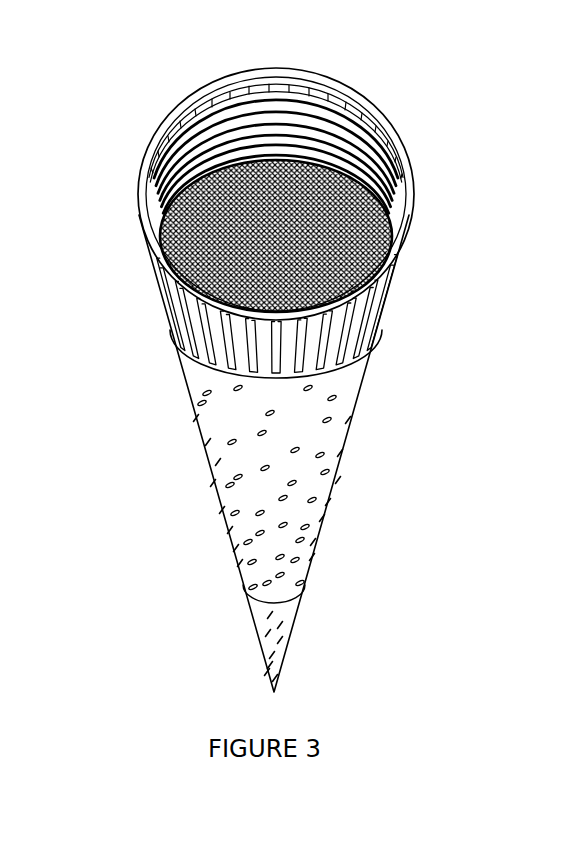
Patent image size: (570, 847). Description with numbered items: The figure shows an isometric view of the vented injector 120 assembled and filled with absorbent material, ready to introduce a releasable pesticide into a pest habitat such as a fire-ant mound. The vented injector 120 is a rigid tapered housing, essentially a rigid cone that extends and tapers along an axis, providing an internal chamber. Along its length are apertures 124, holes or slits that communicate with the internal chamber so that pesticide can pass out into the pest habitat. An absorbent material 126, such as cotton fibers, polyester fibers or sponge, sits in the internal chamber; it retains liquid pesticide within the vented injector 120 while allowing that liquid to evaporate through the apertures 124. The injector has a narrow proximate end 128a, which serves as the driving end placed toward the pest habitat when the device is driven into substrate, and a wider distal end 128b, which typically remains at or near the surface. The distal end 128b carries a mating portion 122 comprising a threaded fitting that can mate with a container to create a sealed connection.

The vented injector 120 is at (380, 55).
The mating portion 122 is at (320, 130).
The apertures 124 is at (257, 463).
The absorbent material 126 is at (247, 207).
The proximate end 128a is at (292, 692).
The distal end 128b is at (432, 205).